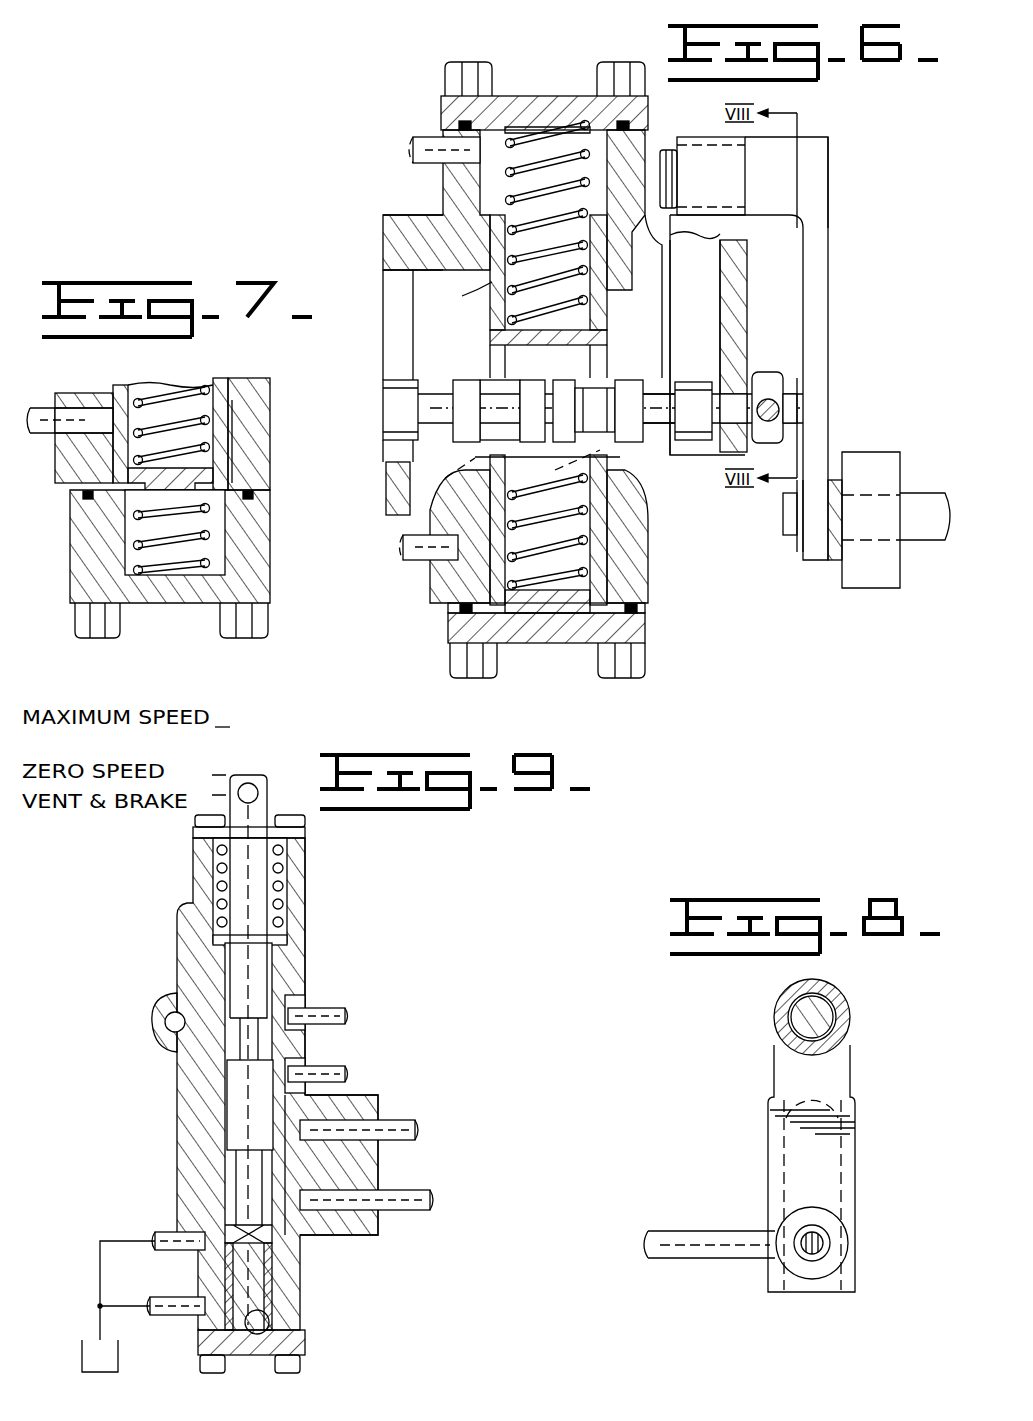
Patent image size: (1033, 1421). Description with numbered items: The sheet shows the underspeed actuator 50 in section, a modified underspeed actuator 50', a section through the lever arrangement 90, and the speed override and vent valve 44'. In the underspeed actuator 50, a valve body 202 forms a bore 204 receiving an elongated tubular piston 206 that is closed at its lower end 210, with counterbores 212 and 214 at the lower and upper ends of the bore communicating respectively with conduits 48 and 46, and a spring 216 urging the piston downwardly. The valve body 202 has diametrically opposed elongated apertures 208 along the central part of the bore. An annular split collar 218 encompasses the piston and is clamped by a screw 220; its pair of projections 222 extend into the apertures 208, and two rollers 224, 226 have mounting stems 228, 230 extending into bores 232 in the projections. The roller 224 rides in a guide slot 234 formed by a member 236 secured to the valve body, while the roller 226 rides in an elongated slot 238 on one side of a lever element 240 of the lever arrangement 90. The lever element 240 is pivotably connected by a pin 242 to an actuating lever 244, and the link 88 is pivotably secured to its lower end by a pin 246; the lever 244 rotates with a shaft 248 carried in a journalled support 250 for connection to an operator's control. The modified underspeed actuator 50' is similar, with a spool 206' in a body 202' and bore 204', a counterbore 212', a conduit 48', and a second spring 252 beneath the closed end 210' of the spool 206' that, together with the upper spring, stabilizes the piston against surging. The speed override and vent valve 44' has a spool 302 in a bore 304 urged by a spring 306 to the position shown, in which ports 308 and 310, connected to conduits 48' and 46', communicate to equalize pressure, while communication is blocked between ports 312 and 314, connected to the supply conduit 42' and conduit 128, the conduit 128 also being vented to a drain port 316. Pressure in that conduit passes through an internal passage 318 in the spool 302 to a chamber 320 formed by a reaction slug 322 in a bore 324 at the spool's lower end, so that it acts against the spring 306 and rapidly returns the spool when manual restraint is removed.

In FIG. 6, the underspeed actuator 50 is at (544, 78).
In FIG. 6, the conduit 46 is at (421, 124).
In FIG. 6, the valve body 202 is at (426, 200).
In FIG. 6, the guide slot 234 is at (395, 272).
In FIG. 6, the counterbore 214 is at (625, 155).
In FIG. 6, the bore 204 is at (515, 276).
In FIG. 6, the elongated apertures 208 is at (670, 268).
In FIG. 6, the tubular piston 206 is at (407, 366).
In FIG. 6, the annular split collar 218 is at (498, 378).
In FIG. 6, the mounting stem 228 is at (397, 395).
In FIG. 6, the roller 224 is at (420, 408).
In FIG. 6, the projections 222 is at (405, 440).
In FIG. 6, the mounting stem 230 is at (658, 385).
In FIG. 6, the bores 232 is at (482, 466).
In FIG. 6, the member 236 is at (395, 478).
In FIG. 6, the conduit 48 is at (415, 562).
In FIG. 6, the counterbore 212 is at (667, 536).
In FIG. 6, the spring 216 is at (620, 510).
In FIG. 7, the spring 216 is at (195, 390).
In FIG. 6, the lower end 210 is at (546, 639).
In FIG. 6, the pin 242 is at (660, 183).
In FIG. 8, the pin 242 is at (818, 1015).
In FIG. 6, the actuating lever 244 is at (812, 212).
In FIG. 6, the lever arrangement 90 is at (835, 310).
In FIG. 8, the lever arrangement 90 is at (768, 1063).
In FIG. 6, the elongated groove or slot 238 is at (722, 278).
In FIG. 8, the elongated groove or slot 238 is at (832, 1118).
In FIG. 6, the lever element 240 is at (733, 297).
In FIG. 8, the lever element 240 is at (830, 1068).
In FIG. 6, the screw 220 is at (640, 352).
In FIG. 6, the pin 246 is at (738, 392).
In FIG. 8, the pin 246 is at (820, 1245).
In FIG. 6, the link 88 is at (805, 394).
In FIG. 8, the link 88 is at (722, 1245).
In FIG. 6, the roller 226 is at (698, 440).
In FIG. 8, the roller 226 is at (832, 1228).
In FIG. 6, the shaft 248 is at (785, 540).
In FIG. 6, the journalled support 250 is at (889, 520).
In FIG. 7, the conduit 48' is at (70, 417).
In FIG. 9, the conduit 48' is at (352, 1002).
In FIG. 7, the spool 206' is at (213, 408).
In FIG. 7, the spring 204' is at (160, 403).
In FIG. 7, the valve body 202' is at (283, 434).
In FIG. 7, the gap 212' is at (287, 448).
In FIG. 7, the closed end 210' is at (149, 544).
In FIG. 7, the second spring 252 is at (215, 545).
In FIG. 7, the modified underspeed actuator 50' is at (171, 640).
In FIG. 9, the bore 304 is at (240, 1067).
In FIG. 9, the spring 306 is at (285, 865).
In FIG. 9, the spool 302 is at (240, 975).
In FIG. 9, the speed override and vent valve 44' is at (366, 966).
In FIG. 9, the port 308 is at (285, 1000).
In FIG. 9, the port 310 is at (288, 1068).
In FIG. 9, the conduit 46' is at (355, 1060).
In FIG. 9, the port 312 is at (340, 1130).
In FIG. 9, the supply conduit 42' is at (389, 1118).
In FIG. 9, the port 314 is at (330, 1195).
In FIG. 9, the conduit 128 is at (427, 1200).
In FIG. 9, the drain port 316 is at (208, 1240).
In FIG. 9, the internal passage 318 is at (230, 1262).
In FIG. 9, the chamber 320 is at (270, 1245).
In FIG. 9, the reaction slug 322 is at (250, 1290).
In FIG. 9, the bore 324 is at (270, 1332).